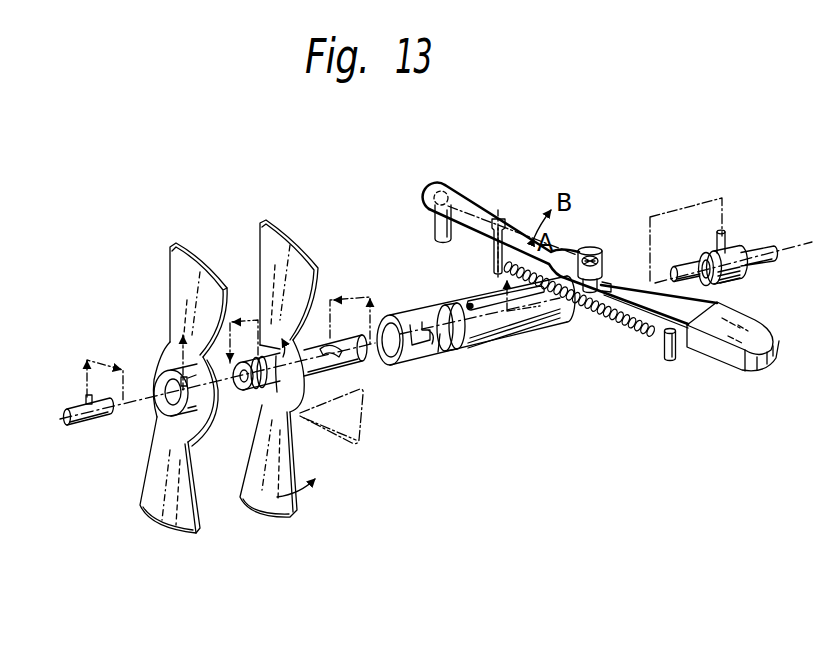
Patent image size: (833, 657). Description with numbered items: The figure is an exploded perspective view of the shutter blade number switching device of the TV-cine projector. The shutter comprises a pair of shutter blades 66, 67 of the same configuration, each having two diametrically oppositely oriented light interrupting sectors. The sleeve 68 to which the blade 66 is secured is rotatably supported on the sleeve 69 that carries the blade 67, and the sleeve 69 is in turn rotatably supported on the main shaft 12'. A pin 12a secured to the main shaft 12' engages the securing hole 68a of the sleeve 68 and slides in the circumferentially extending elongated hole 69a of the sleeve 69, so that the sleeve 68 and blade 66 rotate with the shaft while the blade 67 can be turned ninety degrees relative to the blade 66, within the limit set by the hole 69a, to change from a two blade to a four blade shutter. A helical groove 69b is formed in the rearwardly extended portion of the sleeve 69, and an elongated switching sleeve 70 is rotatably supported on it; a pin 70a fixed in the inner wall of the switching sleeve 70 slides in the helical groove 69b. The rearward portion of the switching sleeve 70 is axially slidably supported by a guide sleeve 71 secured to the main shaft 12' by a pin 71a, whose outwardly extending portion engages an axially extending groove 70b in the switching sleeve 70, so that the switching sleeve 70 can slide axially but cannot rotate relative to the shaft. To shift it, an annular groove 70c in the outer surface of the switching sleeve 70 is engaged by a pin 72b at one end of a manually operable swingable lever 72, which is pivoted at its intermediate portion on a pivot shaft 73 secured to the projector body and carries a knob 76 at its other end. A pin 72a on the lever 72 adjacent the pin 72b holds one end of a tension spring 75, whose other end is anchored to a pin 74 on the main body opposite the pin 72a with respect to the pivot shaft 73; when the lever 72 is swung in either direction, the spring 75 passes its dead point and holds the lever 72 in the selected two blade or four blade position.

The main shaft 12' is at (441, 340).
The pin 12a is at (85, 399).
The shutter blade 66 is at (171, 252).
The shutter blade 67 is at (260, 237).
The sleeve 68 is at (157, 383).
The securing hole 68a is at (182, 378).
The sleeve 69 is at (264, 393).
The elongated hole 69a is at (292, 412).
The helical groove 69b is at (332, 344).
The switching sleeve 70 is at (527, 328).
The pin 70a is at (440, 357).
The axially extending groove 70b is at (476, 302).
The annular groove 70c is at (463, 345).
The guide sleeve 71 is at (733, 282).
The pin 71a is at (724, 232).
The swingable lever 72 is at (470, 200).
The pin 72a is at (500, 216).
The pin 72b is at (433, 226).
The pivot shaft 73 is at (592, 249).
The pin 74 is at (673, 360).
The tension spring 75 is at (632, 331).
The knob 76 is at (733, 366).